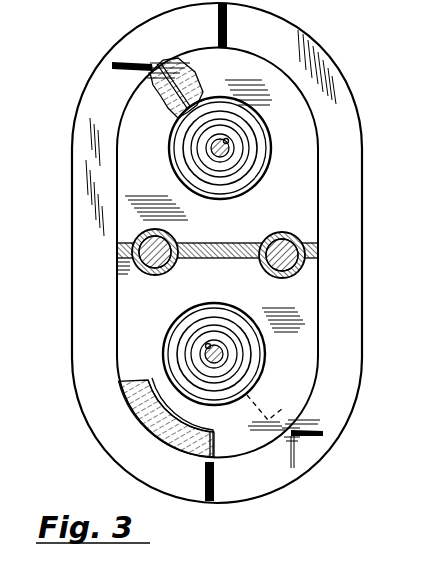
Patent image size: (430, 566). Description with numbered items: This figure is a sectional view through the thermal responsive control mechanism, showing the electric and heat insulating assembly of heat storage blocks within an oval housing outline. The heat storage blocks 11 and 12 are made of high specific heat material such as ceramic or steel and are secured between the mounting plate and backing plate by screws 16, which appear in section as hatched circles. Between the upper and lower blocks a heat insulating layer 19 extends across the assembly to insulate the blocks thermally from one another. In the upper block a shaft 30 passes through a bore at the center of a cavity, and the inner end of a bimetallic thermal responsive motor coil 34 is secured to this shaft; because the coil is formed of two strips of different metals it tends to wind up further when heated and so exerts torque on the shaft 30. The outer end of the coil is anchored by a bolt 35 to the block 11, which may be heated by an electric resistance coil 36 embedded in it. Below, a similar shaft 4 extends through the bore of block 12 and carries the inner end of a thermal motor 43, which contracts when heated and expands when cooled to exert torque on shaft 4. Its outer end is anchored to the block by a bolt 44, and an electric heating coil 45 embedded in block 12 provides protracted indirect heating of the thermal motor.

The shaft 4 is at (225, 352).
The heat storage block 11 is at (303, 187).
The heat storage block 12 is at (298, 375).
The screws 16 is at (262, 239).
The heat insulating layer 19 is at (213, 259).
The shaft 30 is at (229, 146).
The bimetallic thermal responsive motor coil 34 is at (266, 164).
The bolts 35 is at (176, 70).
The electric resistance coil 36 is at (228, 37).
The thermal motor 43 is at (238, 322).
The bolts 44 is at (285, 428).
The electric heating coil 45 is at (215, 483).